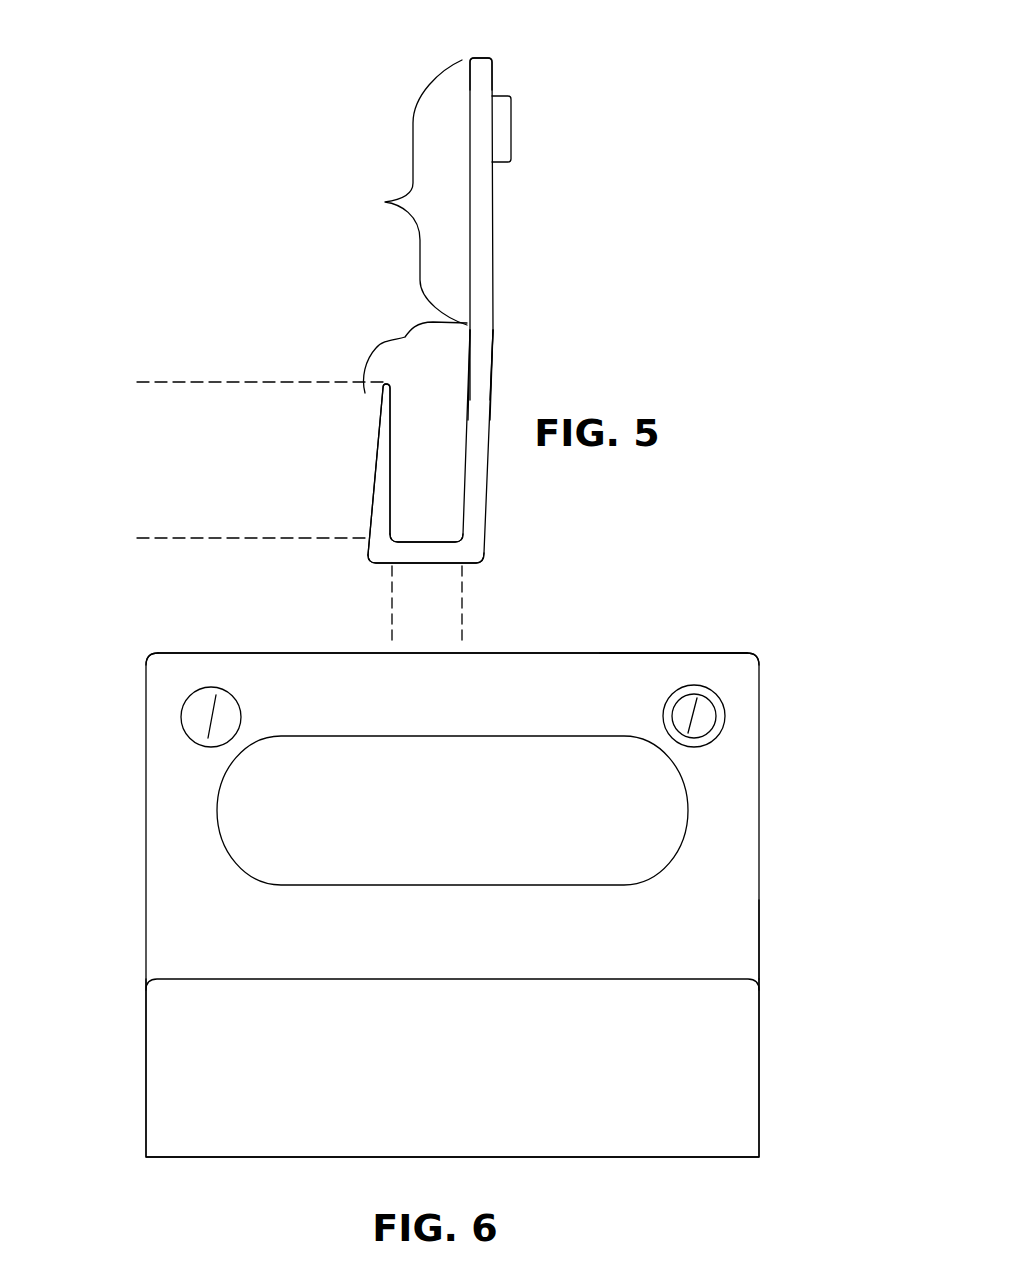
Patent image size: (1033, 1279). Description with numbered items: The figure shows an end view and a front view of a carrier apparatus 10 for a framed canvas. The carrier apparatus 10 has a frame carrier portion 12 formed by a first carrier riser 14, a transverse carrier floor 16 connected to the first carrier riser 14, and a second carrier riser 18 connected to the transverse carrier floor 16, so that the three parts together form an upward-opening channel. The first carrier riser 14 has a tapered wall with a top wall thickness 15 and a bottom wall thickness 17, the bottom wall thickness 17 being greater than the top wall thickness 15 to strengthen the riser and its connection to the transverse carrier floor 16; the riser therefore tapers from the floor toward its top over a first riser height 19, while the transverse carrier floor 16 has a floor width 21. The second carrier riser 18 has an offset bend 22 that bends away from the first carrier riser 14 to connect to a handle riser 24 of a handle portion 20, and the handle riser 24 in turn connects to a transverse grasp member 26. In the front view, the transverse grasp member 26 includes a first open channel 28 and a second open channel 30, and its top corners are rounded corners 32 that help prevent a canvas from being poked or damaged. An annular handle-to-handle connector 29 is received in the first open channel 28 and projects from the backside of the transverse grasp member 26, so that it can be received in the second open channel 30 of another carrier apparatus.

In FIG. 5, the carrier apparatus 10 is at (532, 284).
In FIG. 6, the carrier apparatus 10 is at (645, 620).
In FIG. 5, the frame carrier portion 12 is at (405, 337).
In FIG. 5, the first carrier riser 14 is at (372, 510).
In FIG. 6, the first carrier riser 14 is at (695, 1067).
In FIG. 5, the top wall thickness 15 is at (437, 390).
In FIG. 5, the transverse carrier floor 16 is at (428, 553).
In FIG. 5, the bottom wall thickness 17 is at (437, 527).
In FIG. 5, the second carrier riser 18 is at (475, 472).
In FIG. 5, the first riser height 19 is at (145, 384).
In FIG. 5, the handle portion 20 is at (385, 202).
In FIG. 5, the floor width 21 is at (393, 635).
In FIG. 5, the offset bend 22 is at (482, 382).
In FIG. 6, the offset bend 22 is at (707, 915).
In FIG. 5, the handle riser 24 is at (485, 287).
In FIG. 6, the handle riser 24 is at (732, 818).
In FIG. 5, the transverse grasp member 26 is at (482, 87).
In FIG. 6, the transverse grasp member 26 is at (370, 685).
In FIG. 6, the first open channel 28 is at (698, 713).
In FIG. 5, the annular handle-to-handle connector 29 is at (500, 148).
In FIG. 6, the annular handle-to-handle connector 29 is at (713, 693).
In FIG. 6, the second open channel 30 is at (210, 718).
In FIG. 6, the rounded corners 32 is at (147, 657).